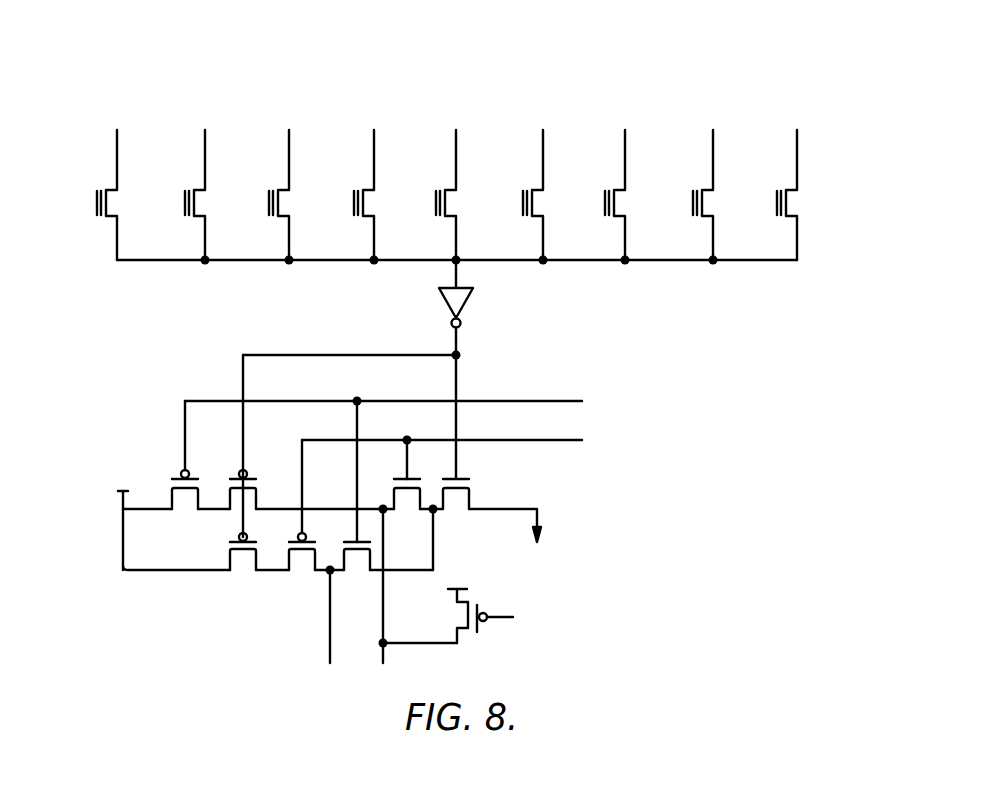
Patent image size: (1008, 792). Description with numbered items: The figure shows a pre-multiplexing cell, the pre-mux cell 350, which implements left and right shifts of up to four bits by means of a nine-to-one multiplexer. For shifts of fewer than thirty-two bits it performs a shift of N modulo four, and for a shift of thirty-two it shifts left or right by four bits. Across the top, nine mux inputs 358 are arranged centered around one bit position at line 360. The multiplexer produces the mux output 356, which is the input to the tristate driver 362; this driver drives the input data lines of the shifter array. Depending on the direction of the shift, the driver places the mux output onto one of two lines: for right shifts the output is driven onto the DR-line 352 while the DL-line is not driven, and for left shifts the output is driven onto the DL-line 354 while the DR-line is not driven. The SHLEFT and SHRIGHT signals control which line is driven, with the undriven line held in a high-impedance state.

The pre-mux cell 350 is at (788, 36).
The mux inputs 358 is at (820, 72).
The line 360 is at (457, 172).
The mux output 356 is at (458, 343).
The tristate driver 362 is at (103, 385).
The DL-line 354 is at (329, 657).
The DR-line 352 is at (385, 651).